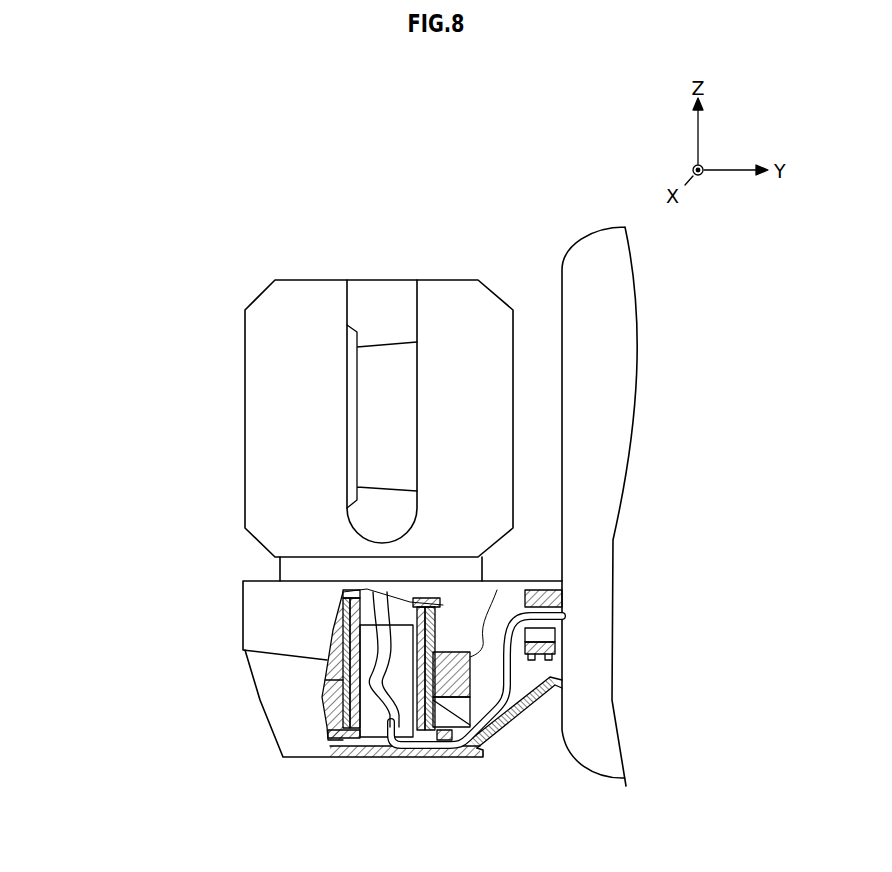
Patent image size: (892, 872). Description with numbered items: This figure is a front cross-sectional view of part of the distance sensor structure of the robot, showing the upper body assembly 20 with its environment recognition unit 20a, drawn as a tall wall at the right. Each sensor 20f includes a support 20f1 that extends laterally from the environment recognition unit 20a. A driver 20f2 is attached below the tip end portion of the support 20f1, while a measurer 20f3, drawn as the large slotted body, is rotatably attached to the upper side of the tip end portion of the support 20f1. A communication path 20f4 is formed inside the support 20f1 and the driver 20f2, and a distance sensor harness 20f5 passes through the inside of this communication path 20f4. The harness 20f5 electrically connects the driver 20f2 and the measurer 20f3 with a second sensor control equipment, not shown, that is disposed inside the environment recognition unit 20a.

The environment recognition unit assembly 20 is at (515, 213).
The environment recognition unit 20a is at (600, 762).
The sensor 20f is at (186, 288).
The support 20f1 is at (270, 612).
The driver 20f2 is at (293, 717).
The measurer 20f3 is at (266, 365).
The communication path 20f4 is at (373, 731).
The distance sensor harness 20f5 is at (440, 748).